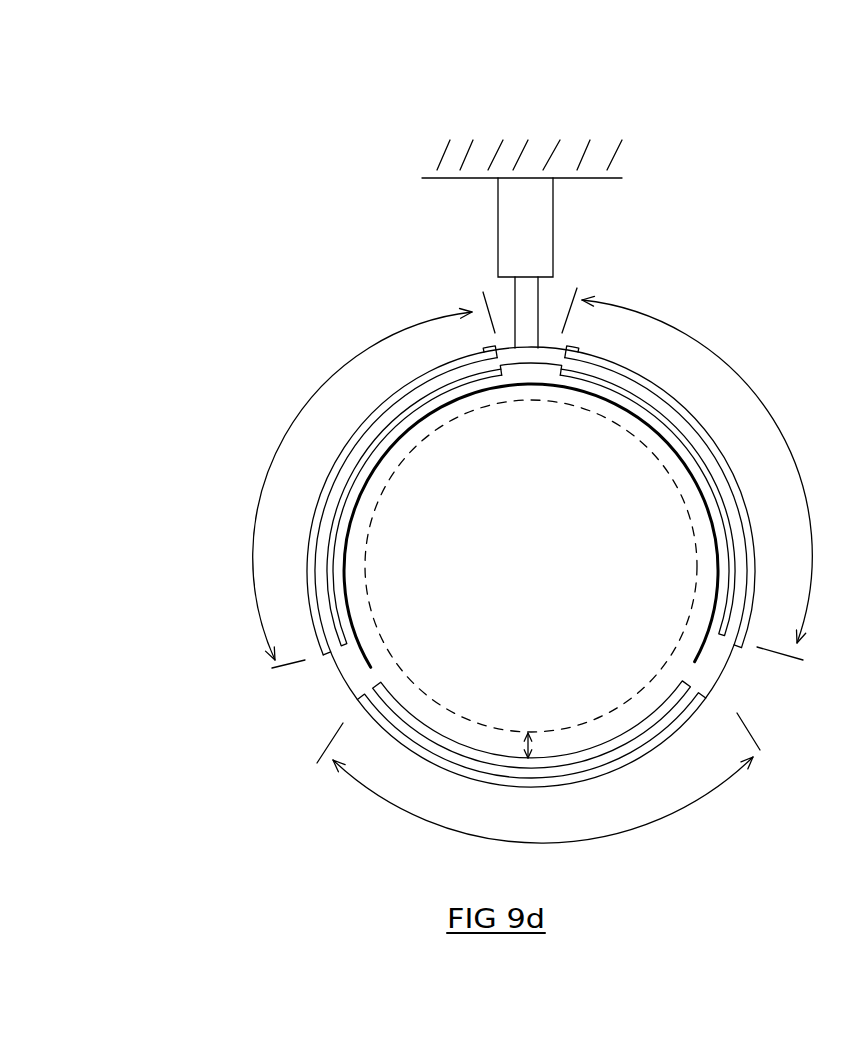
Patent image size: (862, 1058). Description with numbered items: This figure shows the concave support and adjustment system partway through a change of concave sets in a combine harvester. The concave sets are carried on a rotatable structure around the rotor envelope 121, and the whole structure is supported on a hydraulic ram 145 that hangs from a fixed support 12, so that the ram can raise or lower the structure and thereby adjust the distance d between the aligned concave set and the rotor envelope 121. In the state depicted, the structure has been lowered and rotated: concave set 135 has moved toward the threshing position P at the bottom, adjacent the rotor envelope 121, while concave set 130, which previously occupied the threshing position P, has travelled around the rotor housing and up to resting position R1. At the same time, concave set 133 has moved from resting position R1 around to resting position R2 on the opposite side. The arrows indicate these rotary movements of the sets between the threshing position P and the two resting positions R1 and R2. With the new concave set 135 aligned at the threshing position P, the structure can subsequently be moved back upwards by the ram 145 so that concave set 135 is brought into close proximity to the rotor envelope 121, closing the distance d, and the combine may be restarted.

The fixed support / mounting structure 12 is at (582, 138).
The hydraulic ram 145 is at (542, 222).
The concave set 130 is at (305, 552).
The concave set 133 is at (697, 407).
The rotor envelope 121 is at (663, 670).
The concave set 135 is at (607, 777).
The distance d is at (531, 733).
The resting position R1 is at (345, 489).
The resting position R2 is at (709, 478).
The threshing position P is at (543, 819).